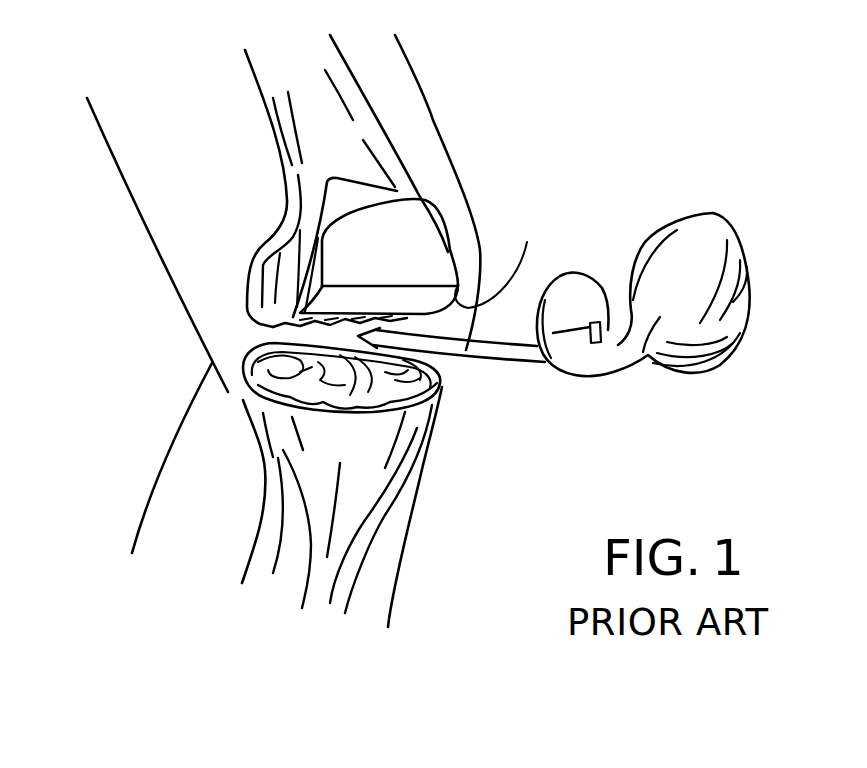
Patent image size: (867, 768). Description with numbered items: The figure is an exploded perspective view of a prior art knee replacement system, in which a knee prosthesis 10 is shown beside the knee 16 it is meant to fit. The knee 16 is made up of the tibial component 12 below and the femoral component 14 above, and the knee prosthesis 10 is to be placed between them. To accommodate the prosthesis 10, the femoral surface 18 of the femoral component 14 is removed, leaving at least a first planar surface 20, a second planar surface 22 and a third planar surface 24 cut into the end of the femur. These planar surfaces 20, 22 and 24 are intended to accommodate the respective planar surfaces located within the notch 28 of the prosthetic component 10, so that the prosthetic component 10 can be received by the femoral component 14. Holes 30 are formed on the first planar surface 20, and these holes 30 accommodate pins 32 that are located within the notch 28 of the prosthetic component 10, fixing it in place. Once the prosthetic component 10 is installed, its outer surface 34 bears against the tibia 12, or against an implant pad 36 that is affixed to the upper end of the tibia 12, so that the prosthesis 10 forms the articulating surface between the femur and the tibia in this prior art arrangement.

The knee prosthesis 10 is at (730, 288).
The tibial component 12 is at (370, 480).
The femoral component 14 is at (380, 148).
The knee 16 is at (480, 259).
The femoral surface 18 is at (303, 247).
The first planar surface 20 is at (430, 329).
The second planar surface 22 is at (498, 258).
The third planar surface 24 is at (430, 240).
The notch 28 is at (609, 272).
The holes 30 is at (293, 327).
The pins 32 is at (587, 340).
The outer surface 34 is at (707, 373).
The implant pad 36 is at (440, 381).